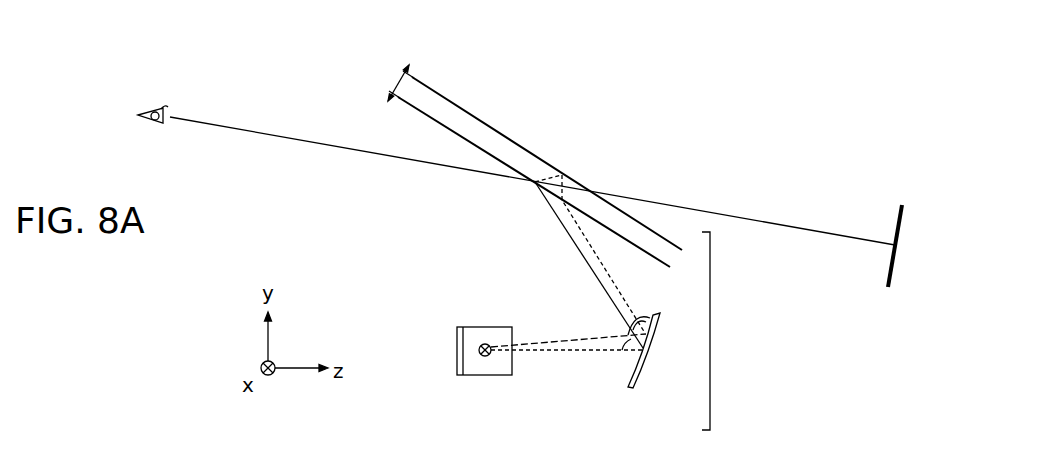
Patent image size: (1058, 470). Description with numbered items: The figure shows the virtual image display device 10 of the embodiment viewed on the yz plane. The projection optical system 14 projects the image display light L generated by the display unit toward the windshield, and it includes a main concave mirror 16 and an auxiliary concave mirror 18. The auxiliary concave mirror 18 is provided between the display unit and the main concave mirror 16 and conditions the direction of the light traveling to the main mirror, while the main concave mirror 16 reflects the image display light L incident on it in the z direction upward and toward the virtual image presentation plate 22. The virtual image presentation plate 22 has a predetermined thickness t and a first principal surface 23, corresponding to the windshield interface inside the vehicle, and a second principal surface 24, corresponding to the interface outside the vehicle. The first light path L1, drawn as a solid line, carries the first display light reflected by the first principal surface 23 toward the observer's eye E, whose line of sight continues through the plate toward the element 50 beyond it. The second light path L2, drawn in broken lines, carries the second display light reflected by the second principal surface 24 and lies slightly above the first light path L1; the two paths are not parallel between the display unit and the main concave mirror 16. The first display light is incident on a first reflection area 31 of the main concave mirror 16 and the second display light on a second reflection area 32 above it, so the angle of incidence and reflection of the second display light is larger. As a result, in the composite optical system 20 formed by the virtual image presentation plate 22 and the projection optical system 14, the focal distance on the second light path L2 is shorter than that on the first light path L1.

The display device 10 is at (419, 333).
The projection optical system 14 is at (452, 295).
The main concave mirror 16 is at (664, 370).
The auxiliary concave mirror 18 is at (490, 375).
The composite optical system 20 is at (712, 331).
The virtual image presentation plate 22 is at (522, 140).
The first principal surface 23 is at (440, 128).
The second principal surface 24 is at (452, 98).
The first reflection area 31 is at (658, 352).
The second reflection area 32 is at (659, 330).
The screen 50 is at (908, 176).
The eye of observer E is at (152, 107).
The image display light L is at (536, 378).
The first light path L1 is at (583, 257).
The second light path L2 is at (583, 233).
The predetermined thickness t is at (393, 86).